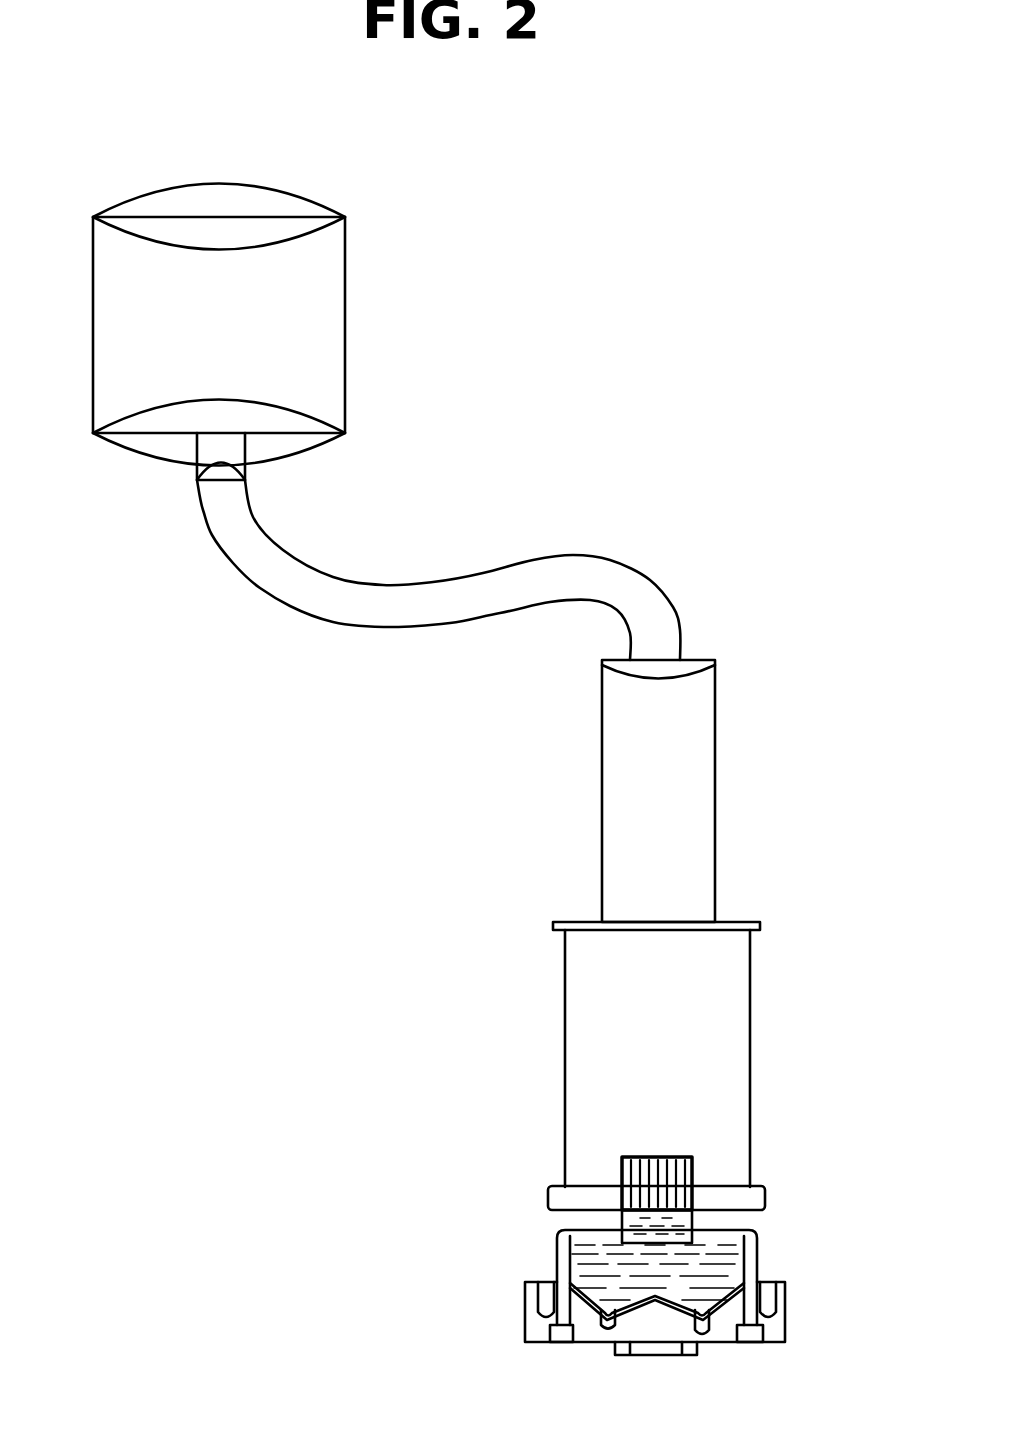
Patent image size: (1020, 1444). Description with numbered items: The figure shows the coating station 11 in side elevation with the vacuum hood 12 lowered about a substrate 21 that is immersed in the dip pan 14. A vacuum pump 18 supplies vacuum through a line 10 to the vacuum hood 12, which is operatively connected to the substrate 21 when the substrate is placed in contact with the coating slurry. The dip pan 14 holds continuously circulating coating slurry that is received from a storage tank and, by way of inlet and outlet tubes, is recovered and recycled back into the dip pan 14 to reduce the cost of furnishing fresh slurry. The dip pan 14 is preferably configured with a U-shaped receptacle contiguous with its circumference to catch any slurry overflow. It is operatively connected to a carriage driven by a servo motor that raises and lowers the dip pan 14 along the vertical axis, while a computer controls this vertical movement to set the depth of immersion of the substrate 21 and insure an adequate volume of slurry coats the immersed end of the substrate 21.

The vacuum pump 18 is at (345, 282).
The line 10 is at (210, 529).
The coating station 11 is at (386, 1200).
The substrate 21 is at (622, 1168).
The vacuum hood 12 is at (548, 1196).
The dip pan 14 is at (557, 1250).